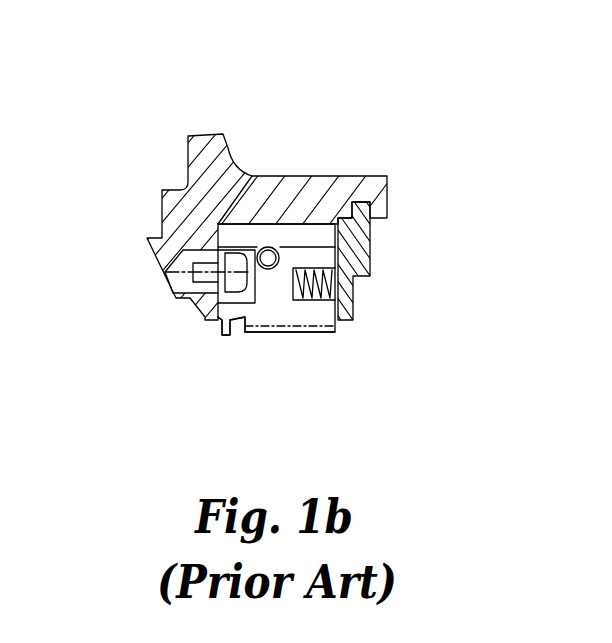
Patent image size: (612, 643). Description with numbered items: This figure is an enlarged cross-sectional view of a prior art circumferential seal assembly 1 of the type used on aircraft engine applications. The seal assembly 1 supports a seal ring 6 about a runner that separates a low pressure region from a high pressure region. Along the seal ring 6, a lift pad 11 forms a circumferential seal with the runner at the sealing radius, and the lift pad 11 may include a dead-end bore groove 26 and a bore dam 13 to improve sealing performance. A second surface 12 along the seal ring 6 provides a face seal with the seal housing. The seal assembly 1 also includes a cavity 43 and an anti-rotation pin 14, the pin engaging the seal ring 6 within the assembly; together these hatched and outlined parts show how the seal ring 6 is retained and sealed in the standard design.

The seal assembly 1 is at (317, 138).
The seal ring 6 is at (318, 333).
The lift pad 11 is at (283, 331).
The second surface 12 is at (218, 320).
The bore dam 13 is at (221, 336).
The anti-rotation pin 14 is at (193, 262).
The dead-end bore groove 26 is at (237, 334).
The cavity 43 is at (315, 232).